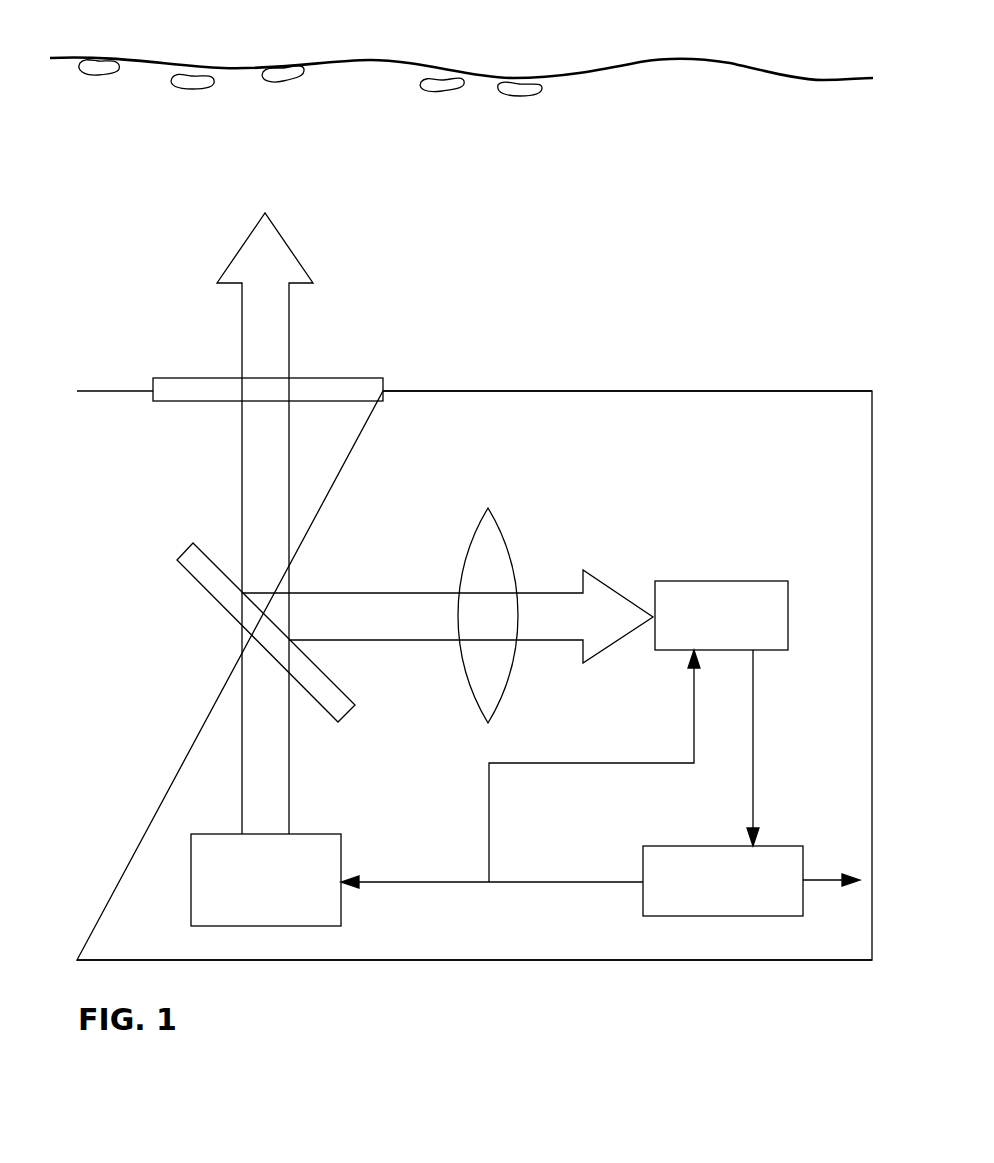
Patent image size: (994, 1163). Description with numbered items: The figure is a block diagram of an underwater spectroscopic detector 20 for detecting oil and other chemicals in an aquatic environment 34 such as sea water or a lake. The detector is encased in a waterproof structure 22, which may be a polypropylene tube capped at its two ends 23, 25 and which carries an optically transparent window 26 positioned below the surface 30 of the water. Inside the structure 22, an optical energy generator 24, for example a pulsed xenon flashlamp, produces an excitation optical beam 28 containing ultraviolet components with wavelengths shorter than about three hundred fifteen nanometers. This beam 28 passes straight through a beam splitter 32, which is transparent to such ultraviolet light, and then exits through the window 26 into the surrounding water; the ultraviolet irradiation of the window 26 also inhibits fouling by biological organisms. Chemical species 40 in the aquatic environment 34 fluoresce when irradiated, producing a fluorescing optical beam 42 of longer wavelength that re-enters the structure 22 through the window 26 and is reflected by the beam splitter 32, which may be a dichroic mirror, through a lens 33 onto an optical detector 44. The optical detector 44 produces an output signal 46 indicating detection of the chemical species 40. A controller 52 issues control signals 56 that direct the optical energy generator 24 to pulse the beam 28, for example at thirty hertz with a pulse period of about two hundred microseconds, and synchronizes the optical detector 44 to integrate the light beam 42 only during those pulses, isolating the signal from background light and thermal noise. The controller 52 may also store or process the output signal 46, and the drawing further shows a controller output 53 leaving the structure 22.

The underwater spectroscopic detector 20 is at (700, 352).
The structure 22 is at (872, 460).
The end 23 is at (587, 391).
The optical energy generator 24 is at (191, 876).
The end 25 is at (598, 960).
The optically transparent window 26 is at (340, 401).
The excitation optical beam 28 is at (242, 757).
The surface 30 is at (603, 68).
The beam splitter 32 is at (200, 588).
The lens 33 is at (500, 528).
The aquatic environment 34 is at (703, 110).
The chemical species 40 is at (98, 76).
The fluorescing optical beam 42 is at (375, 592).
The optical detector 44 is at (722, 581).
The output signal 46 is at (753, 720).
The controller 52 is at (660, 846).
The controller output 53 is at (826, 880).
The control signals 56 is at (450, 882).